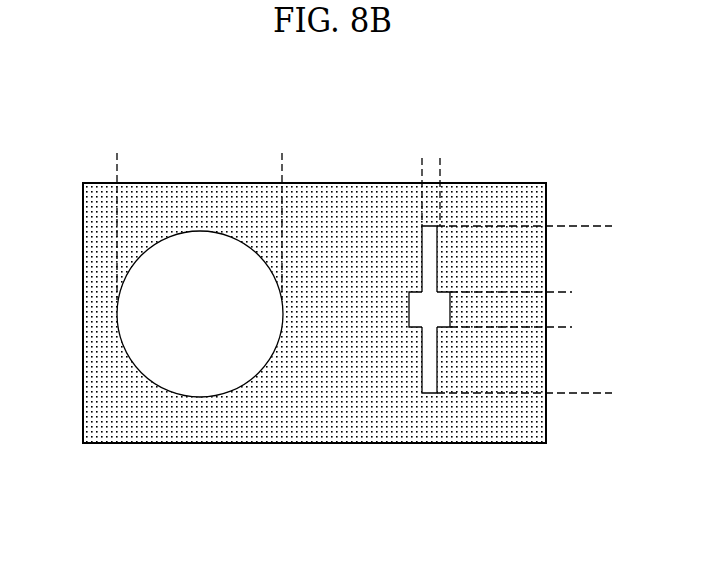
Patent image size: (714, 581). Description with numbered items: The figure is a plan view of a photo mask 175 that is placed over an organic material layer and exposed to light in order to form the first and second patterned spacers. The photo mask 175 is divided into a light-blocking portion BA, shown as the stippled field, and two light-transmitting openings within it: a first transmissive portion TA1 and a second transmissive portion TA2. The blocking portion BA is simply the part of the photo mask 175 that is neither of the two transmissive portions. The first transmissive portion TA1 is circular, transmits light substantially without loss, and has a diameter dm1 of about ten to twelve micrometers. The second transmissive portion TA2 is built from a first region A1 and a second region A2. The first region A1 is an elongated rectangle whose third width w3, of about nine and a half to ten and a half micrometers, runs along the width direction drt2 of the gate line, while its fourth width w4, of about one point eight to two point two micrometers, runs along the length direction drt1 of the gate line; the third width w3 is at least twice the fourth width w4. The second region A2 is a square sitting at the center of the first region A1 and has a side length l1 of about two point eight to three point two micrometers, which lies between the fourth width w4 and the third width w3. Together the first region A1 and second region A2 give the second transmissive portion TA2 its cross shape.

The photo mask 175 is at (513, 158).
The blocking portion BA is at (323, 388).
The first transmissive portion TA1 is at (197, 362).
The second transmissive portion TA2 is at (390, 231).
The first region A1 is at (433, 240).
The second region A2 is at (420, 303).
The diameter dm1 is at (282, 165).
The fourth width w4 is at (393, 166).
The third width w3 is at (600, 226).
The length l1 is at (560, 292).
The length direction of the gate line drt1 is at (137, 458).
The width direction of the gate line drt2 is at (72, 390).